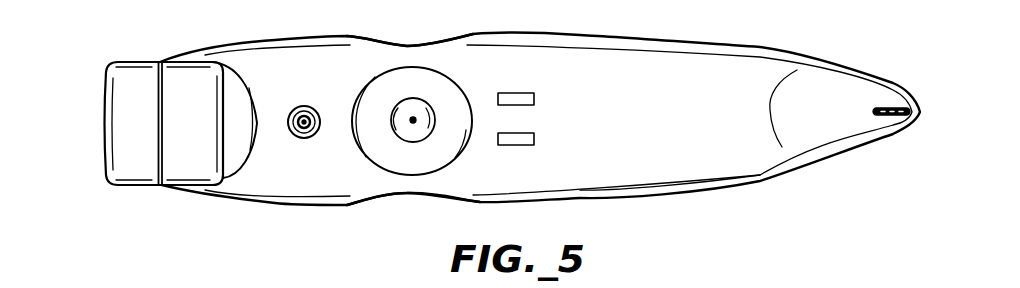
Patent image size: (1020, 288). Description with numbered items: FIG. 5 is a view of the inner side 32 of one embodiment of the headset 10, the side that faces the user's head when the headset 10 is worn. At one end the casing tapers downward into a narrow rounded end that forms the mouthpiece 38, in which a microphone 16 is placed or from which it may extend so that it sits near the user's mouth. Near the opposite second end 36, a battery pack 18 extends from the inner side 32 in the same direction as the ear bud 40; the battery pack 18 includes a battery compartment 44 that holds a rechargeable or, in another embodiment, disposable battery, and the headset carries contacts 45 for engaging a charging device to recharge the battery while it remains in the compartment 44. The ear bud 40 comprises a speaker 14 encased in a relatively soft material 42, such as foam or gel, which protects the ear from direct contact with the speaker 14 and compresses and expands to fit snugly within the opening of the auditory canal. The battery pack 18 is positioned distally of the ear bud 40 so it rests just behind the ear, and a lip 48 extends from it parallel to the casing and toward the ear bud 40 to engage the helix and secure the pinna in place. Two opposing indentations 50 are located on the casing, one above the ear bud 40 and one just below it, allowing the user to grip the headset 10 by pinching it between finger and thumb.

The headset 10 is at (521, 117).
The speaker 14 is at (394, 118).
The microphone 16 is at (883, 107).
The battery pack 18 is at (109, 180).
The inner side 32 is at (692, 151).
The second end 36 is at (923, 112).
The mouthpiece 38 is at (818, 77).
The ear bud 40 is at (427, 120).
The soft material 42 is at (431, 155).
The battery compartment 44 is at (208, 160).
The contacts 45 is at (534, 99).
The lip 48 is at (233, 88).
The indentations 50 is at (405, 43).